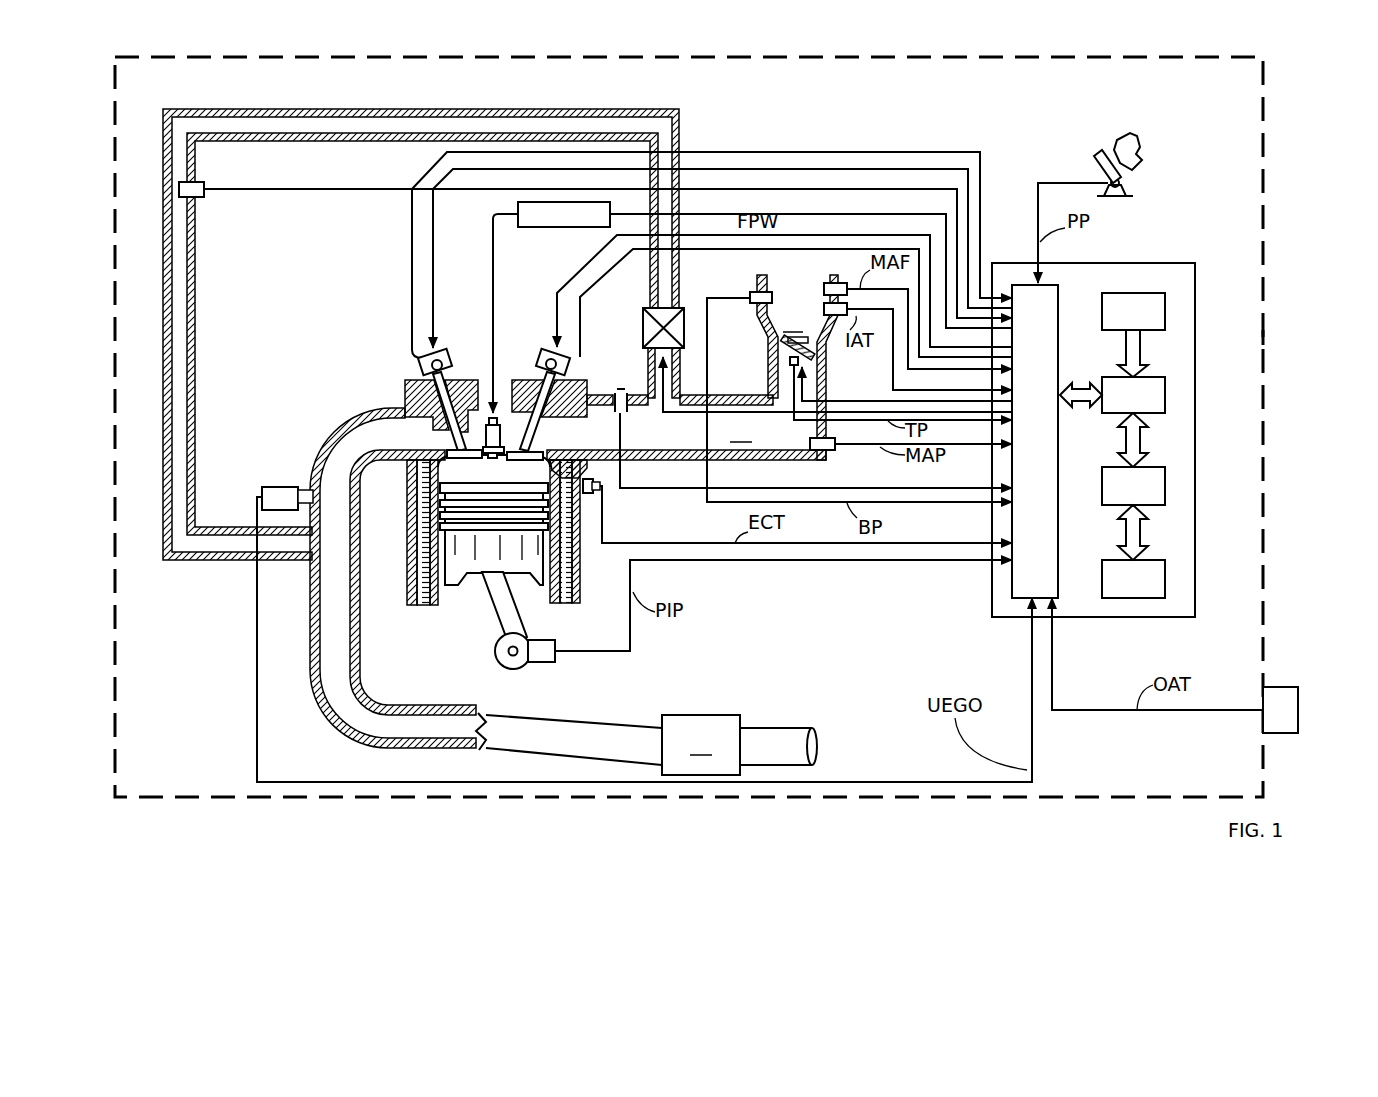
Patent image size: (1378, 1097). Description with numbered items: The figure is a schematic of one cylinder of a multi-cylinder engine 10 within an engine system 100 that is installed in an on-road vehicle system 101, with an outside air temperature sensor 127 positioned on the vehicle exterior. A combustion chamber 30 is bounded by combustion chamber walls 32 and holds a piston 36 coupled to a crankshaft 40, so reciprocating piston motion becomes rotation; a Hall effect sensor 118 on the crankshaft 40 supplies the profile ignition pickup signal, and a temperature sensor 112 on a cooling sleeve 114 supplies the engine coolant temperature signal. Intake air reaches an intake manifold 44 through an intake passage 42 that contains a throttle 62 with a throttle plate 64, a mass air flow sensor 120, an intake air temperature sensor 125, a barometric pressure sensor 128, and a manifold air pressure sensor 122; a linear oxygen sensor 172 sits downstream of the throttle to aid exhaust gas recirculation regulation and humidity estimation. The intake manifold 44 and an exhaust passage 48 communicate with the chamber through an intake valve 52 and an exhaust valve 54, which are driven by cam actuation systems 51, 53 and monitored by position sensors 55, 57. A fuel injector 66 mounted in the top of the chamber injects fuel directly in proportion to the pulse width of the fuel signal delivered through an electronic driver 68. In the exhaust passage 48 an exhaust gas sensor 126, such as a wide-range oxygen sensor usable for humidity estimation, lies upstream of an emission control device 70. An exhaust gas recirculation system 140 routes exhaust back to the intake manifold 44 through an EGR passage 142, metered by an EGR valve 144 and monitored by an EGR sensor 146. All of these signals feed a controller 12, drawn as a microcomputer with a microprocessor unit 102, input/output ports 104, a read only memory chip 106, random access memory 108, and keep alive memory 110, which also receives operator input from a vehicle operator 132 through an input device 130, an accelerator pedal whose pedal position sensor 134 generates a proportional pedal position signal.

The engine 10 is at (343, 334).
The controller 12 is at (1195, 265).
The combustion chamber 30 is at (413, 557).
The combustion chamber walls 32 is at (443, 593).
The piston 36 is at (480, 558).
The crankshaft 40 is at (507, 668).
The intake passage 42 is at (797, 367).
The intake manifold 44 is at (686, 427).
The exhaust passage 48 is at (390, 447).
The cam actuation system 51 is at (545, 352).
The intake valve 52 is at (540, 438).
The cam actuation system 53 is at (447, 353).
The exhaust valve 54 is at (405, 417).
The position sensor 55 is at (572, 364).
The position sensor 57 is at (422, 370).
The throttle 62 is at (813, 345).
The throttle plate 64 is at (784, 341).
The fuel injector 66 is at (495, 415).
The electronic driver 68 is at (590, 227).
The emission control device 70 is at (646, 744).
The engine system 100 is at (1286, 148).
The vehicle system 101 is at (1266, 336).
The microprocessor unit 102 is at (1168, 393).
The input/output ports 104 is at (1062, 290).
The read only memory chip 106 is at (1168, 310).
The random access memory 108 is at (1168, 485).
The keep alive memory 110 is at (1168, 578).
The temperature sensor 112 is at (597, 495).
The cooling sleeve 114 is at (570, 560).
The Hall effect sensor 118 is at (548, 662).
The mass air flow sensor 120 is at (830, 283).
The manifold air pressure sensor 122 is at (832, 450).
The intake air temperature sensor 125 is at (826, 306).
The exhaust gas sensor 126 is at (262, 490).
The outside air temperature sensor 127 is at (1278, 687).
The barometric pressure sensor 128 is at (752, 292).
The input device 130 is at (1100, 162).
The vehicle operator 132 is at (1145, 150).
The pedal position sensor 134 is at (1130, 190).
The exhaust gas recirculation system 140 is at (550, 104).
The EGR passage 142 is at (415, 109).
The EGR valve 144 is at (642, 326).
The EGR sensor 146 is at (200, 197).
The linear oxygen sensor 172 is at (628, 413).